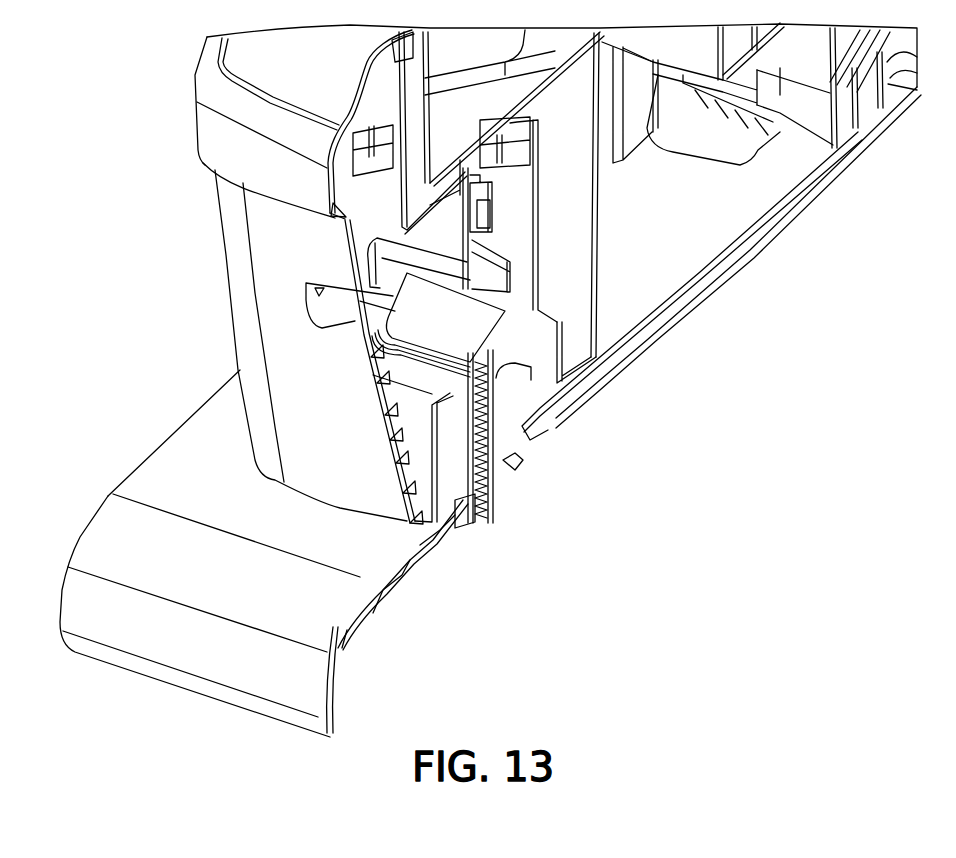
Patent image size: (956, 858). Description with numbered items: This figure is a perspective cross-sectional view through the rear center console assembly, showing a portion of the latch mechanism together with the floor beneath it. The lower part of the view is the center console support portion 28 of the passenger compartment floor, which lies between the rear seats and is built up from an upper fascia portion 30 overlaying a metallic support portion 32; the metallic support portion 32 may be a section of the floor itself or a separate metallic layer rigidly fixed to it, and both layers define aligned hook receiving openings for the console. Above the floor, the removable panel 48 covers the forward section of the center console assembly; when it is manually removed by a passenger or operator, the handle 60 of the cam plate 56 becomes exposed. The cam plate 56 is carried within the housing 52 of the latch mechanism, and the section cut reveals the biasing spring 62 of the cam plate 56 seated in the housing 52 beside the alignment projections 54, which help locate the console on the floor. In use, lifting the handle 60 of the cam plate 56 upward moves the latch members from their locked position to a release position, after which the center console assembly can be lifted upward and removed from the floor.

The center console support portion 28 is at (187, 414).
The upper fascia portion 30 is at (170, 477).
The metallic support portion 32 is at (397, 603).
The removable panel 48 is at (272, 233).
The housing 52 is at (494, 213).
The alignment projections 54 is at (460, 517).
The cam plate 56 is at (497, 338).
The handle 60 is at (463, 313).
The biasing spring 62 is at (487, 482).